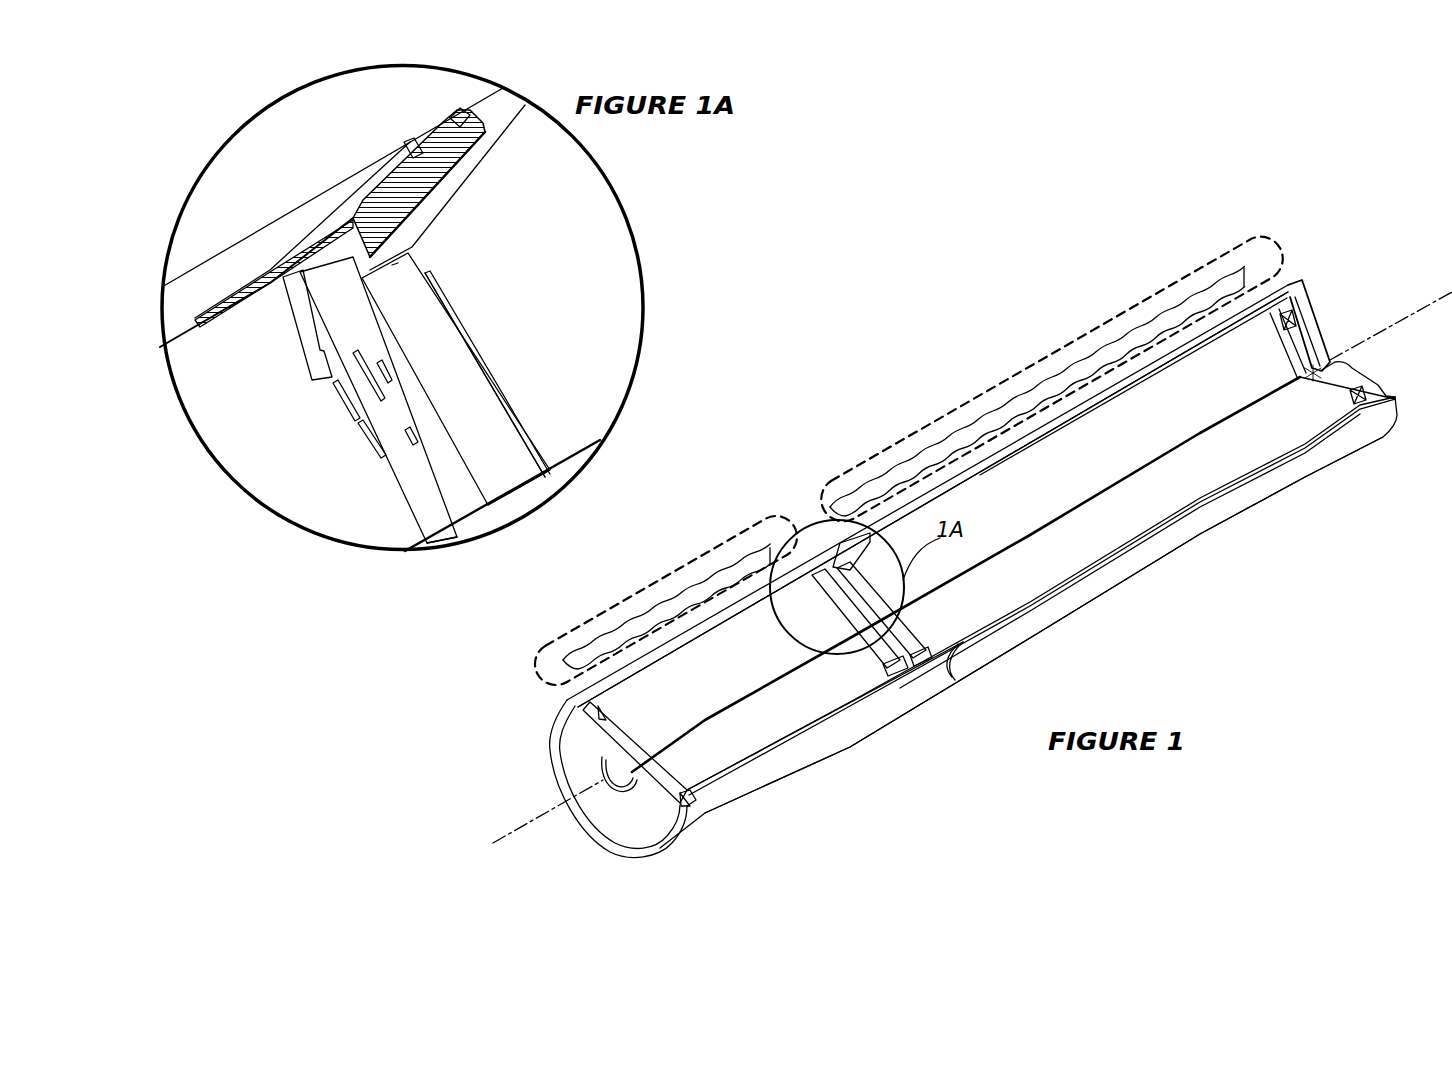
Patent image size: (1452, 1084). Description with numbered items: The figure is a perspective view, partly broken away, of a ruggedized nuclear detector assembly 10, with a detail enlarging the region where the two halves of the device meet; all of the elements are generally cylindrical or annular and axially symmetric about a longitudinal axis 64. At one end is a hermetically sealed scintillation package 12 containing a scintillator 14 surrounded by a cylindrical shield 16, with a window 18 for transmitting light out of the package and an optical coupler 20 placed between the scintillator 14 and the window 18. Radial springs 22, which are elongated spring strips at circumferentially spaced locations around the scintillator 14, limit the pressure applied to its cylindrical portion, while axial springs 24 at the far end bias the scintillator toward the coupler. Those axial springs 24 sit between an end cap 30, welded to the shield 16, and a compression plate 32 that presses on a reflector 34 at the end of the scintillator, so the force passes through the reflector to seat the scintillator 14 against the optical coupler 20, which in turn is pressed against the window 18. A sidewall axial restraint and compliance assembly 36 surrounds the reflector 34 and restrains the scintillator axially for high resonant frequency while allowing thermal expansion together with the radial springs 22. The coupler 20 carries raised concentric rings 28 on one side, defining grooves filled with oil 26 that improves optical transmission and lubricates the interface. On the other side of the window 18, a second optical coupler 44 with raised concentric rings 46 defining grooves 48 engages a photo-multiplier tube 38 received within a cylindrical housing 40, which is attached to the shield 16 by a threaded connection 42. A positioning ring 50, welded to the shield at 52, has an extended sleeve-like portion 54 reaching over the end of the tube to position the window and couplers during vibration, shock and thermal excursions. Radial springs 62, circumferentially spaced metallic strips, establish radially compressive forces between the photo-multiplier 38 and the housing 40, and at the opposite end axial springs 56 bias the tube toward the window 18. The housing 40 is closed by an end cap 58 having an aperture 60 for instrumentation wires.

In FIG. 1, the detector assembly 10 is at (1108, 270).
In FIG. 1, the scintillation package 12 is at (1286, 496).
In FIG. 1, the scintillator 14 is at (1090, 553).
In FIG. 1A, the scintillator 14 is at (367, 187).
In FIG. 1, the cylindrical shield 16 is at (1183, 540).
In FIG. 1, the window 18 is at (920, 640).
In FIG. 1A, the window 18 is at (352, 396).
In FIG. 1, the optical coupler 20 is at (903, 633).
In FIG. 1A, the optical coupler 20 is at (417, 308).
In FIG. 1, the radial springs 22 is at (1033, 393).
In FIG. 1, the axial springs 24 is at (1374, 385).
In FIG. 1A, the oil 26 is at (467, 357).
In FIG. 1A, the raised concentric rings 28 is at (491, 392).
In FIG. 1, the end cap 30 is at (1312, 340).
In FIG. 1, the compression plate 32 is at (1290, 355).
In FIG. 1, the reflector 34 is at (1143, 385).
In FIG. 1, the sidewall axial restraint and compliance assembly 36 is at (1060, 428).
In FIG. 1, the photo-multiplier tube 38 is at (933, 499).
In FIG. 1A, the photo-multiplier tube 38 is at (455, 495).
In FIG. 1, the cylindrical housing 40 is at (833, 742).
In FIG. 1A, the threaded connection 42 is at (379, 192).
In FIG. 1A, the second optical coupler 44 is at (433, 505).
In FIG. 1A, the raised concentric rings 46 is at (407, 440).
In FIG. 1A, the grooves 48 is at (385, 400).
In FIG. 1A, the positioning ring 50 is at (443, 201).
In FIG. 1A, the weld 52 is at (450, 130).
In FIG. 1A, the extended sleeve-like portion 54 is at (308, 252).
In FIG. 1, the axial springs 56 is at (683, 790).
In FIG. 1, the end cap 58 is at (640, 833).
In FIG. 1, the aperture 60 is at (603, 762).
In FIG. 1, the radial springs 62 is at (663, 583).
In FIG. 1, the longitudinal axis 64 is at (1122, 480).